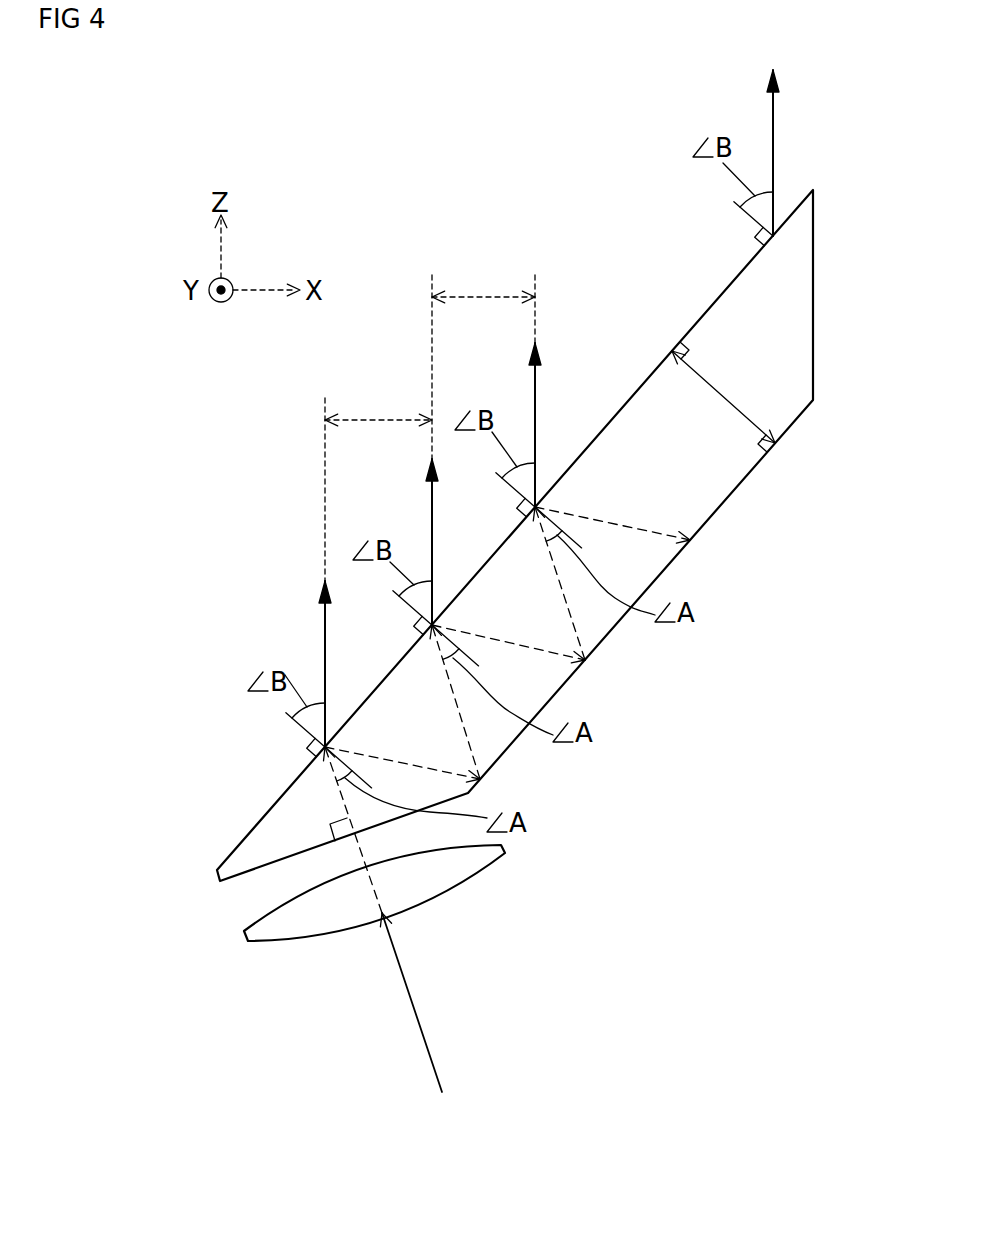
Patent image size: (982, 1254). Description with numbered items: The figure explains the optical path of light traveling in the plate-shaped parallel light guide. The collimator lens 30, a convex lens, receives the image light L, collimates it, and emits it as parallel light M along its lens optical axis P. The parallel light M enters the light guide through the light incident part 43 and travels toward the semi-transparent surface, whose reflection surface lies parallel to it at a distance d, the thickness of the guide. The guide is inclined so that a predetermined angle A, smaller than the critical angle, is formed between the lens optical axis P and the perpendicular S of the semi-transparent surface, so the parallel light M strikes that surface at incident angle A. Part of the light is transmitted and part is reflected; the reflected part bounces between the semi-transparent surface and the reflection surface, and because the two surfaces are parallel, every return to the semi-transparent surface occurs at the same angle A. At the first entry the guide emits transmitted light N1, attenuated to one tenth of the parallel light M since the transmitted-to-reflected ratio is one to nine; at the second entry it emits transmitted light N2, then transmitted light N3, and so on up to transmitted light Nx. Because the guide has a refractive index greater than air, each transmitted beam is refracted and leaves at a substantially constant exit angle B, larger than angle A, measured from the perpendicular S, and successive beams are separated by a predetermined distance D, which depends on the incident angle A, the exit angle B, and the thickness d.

The light incident part 43 is at (243, 872).
The collimator lens 30 is at (307, 928).
The image light L is at (433, 1060).
The lens optical axis P is at (377, 895).
The parallel light M is at (345, 805).
The transmitted light N1 is at (323, 640).
The transmitted light N2 is at (430, 525).
The transmitted light N3 is at (532, 400).
The transmitted light Nx is at (768, 128).
The perpendicular of the semi-transparent surface S is at (310, 734).
The distance of the transmitted light D is at (380, 420).
The distance between semi-transparent surface and reflection surface d is at (722, 400).